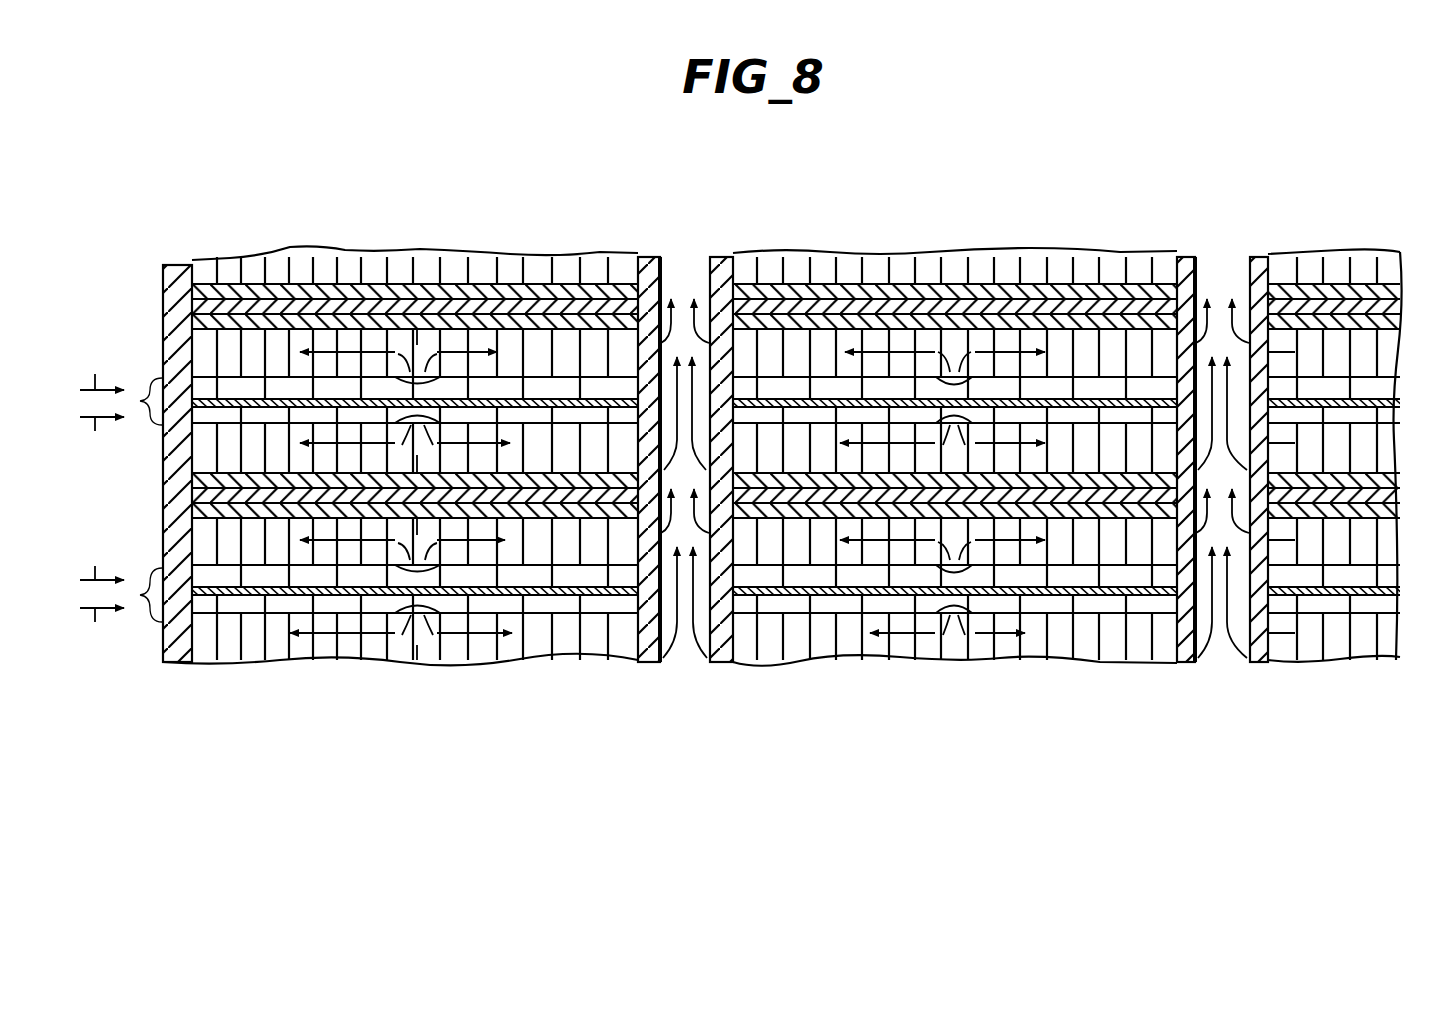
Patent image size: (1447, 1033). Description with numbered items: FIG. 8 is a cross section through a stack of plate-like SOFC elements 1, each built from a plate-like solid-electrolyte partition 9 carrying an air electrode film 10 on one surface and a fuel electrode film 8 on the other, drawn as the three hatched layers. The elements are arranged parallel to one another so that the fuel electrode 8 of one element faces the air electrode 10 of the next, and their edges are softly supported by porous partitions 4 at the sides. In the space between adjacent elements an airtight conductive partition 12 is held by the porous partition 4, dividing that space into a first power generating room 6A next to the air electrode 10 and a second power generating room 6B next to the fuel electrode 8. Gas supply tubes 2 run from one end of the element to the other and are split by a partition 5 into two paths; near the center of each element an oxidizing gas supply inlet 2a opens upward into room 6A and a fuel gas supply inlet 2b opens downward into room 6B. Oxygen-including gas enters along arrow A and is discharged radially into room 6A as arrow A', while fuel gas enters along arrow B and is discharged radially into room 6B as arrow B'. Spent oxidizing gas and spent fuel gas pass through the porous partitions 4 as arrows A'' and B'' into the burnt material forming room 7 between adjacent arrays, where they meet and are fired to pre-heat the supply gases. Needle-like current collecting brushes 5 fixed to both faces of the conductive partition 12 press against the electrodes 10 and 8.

The plate-like SOFC element 1 is at (534, 270).
The gas supply tube 2 is at (148, 426).
The oxidizing gas supply inlet 2a is at (428, 340).
The fuel gas supply inlet 2b is at (408, 696).
The porous partition 4 is at (175, 262).
The partition / needle-like current collecting brush 5 is at (372, 300).
The first power generating room 6A is at (1362, 347).
The second power generating room 6B is at (1362, 448).
The burnt material forming room 7 is at (695, 258).
The fuel electrode film 8 is at (243, 290).
The plate-like solid-electrolyte partition 9 is at (293, 305).
The air electrode film 10 is at (328, 320).
The airtight conductive partition 12 is at (240, 392).
The arrow A (oxidizing gas supply flow) A is at (102, 464).
The arrow B (fuel gas supply flow) B is at (102, 533).
The arrow A' (oxidizing gas discharge flow) A' is at (672, 450).
The arrow B' (fuel gas discharge flow) B' is at (667, 450).
The arrow A'' (spent oxidizing gas flow) A'' is at (1040, 356).
The arrow B'' (spent fuel gas flow) B'' is at (1001, 539).